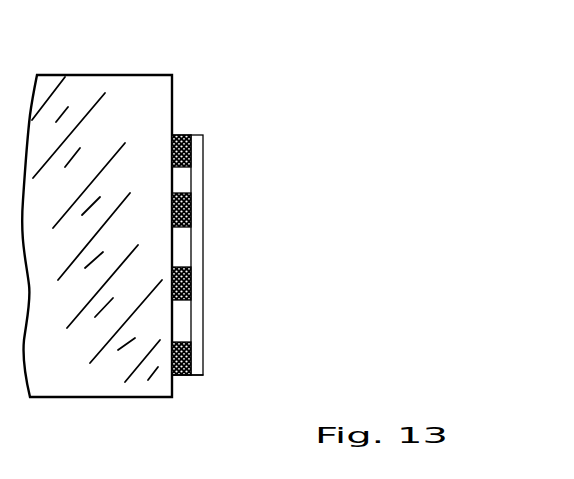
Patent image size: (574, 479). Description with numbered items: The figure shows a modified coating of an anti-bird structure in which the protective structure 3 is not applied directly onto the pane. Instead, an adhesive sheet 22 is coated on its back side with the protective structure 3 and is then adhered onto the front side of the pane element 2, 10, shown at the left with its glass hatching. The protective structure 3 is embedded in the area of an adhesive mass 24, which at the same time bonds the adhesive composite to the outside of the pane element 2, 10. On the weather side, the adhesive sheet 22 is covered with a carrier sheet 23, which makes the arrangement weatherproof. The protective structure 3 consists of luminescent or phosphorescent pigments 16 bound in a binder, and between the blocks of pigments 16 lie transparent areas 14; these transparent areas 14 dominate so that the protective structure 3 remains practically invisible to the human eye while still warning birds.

The pane element 2 is at (97, 261).
The pane element 10 is at (111, 387).
The adhesive sheet 22 is at (223, 250).
The carrier sheet 23 is at (197, 167).
The protective structure 3 is at (191, 208).
The transparent areas 14 is at (182, 245).
The luminescent pigments 16 is at (192, 293).
The adhesive mass 24 is at (183, 375).